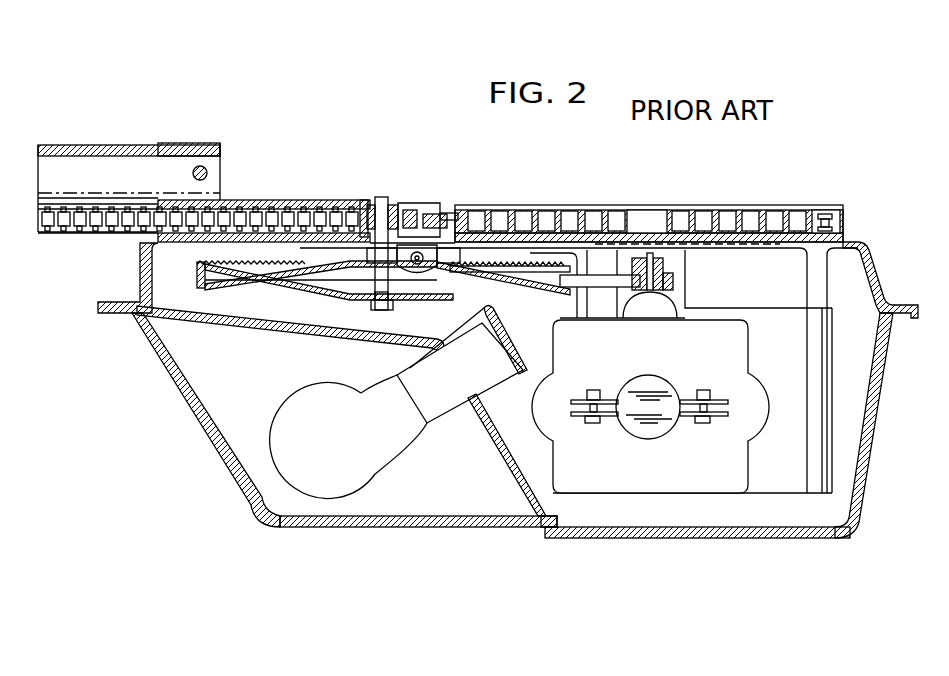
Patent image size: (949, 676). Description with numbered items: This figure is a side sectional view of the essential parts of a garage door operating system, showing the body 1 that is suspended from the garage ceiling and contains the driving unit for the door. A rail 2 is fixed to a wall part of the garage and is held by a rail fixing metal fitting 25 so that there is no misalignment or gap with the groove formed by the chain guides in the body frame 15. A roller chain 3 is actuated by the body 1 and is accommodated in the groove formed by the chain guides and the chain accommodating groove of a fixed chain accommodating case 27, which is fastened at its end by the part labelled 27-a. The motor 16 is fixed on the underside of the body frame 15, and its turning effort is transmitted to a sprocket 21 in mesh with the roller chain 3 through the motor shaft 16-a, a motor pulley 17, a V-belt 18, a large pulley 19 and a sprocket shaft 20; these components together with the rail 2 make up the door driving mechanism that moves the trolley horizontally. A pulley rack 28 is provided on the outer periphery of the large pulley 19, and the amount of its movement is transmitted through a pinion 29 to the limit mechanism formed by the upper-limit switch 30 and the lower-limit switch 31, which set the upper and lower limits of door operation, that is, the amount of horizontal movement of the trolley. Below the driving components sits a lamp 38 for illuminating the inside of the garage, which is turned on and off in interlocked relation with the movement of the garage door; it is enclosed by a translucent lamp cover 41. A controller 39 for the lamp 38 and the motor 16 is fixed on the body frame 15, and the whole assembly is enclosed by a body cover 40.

The body 1 is at (468, 517).
The rail 2 is at (110, 148).
The roller chain 3 is at (252, 220).
The body frame 15 is at (873, 270).
The motor 16 is at (709, 488).
The motor shaft 16-a is at (650, 248).
The motor pulley 17 is at (666, 262).
The V-belt 18 is at (605, 283).
The large pulley 19 is at (318, 296).
The sprocket shaft 20 is at (384, 196).
The sprocket 21 is at (402, 205).
The rail fixing metal fitting 25 is at (198, 141).
The fixed chain accommodating case 27 is at (846, 226).
The fastening bolt 27-a is at (798, 216).
The pulley rack 28 is at (527, 270).
The pinion 29 is at (428, 237).
The upper-limit switch 30 is at (369, 232).
The lower-limit switch 31 is at (458, 263).
The lamp 38 is at (371, 480).
The controller 39 is at (781, 496).
The body cover 40 is at (876, 396).
The translucent lamp cover 41 is at (238, 483).